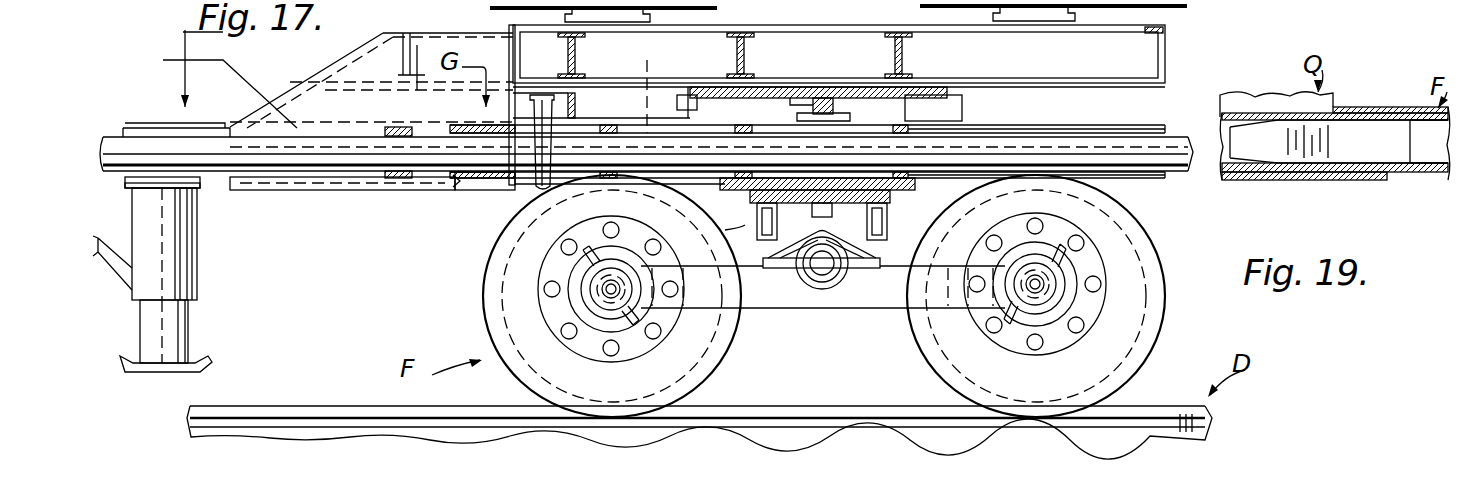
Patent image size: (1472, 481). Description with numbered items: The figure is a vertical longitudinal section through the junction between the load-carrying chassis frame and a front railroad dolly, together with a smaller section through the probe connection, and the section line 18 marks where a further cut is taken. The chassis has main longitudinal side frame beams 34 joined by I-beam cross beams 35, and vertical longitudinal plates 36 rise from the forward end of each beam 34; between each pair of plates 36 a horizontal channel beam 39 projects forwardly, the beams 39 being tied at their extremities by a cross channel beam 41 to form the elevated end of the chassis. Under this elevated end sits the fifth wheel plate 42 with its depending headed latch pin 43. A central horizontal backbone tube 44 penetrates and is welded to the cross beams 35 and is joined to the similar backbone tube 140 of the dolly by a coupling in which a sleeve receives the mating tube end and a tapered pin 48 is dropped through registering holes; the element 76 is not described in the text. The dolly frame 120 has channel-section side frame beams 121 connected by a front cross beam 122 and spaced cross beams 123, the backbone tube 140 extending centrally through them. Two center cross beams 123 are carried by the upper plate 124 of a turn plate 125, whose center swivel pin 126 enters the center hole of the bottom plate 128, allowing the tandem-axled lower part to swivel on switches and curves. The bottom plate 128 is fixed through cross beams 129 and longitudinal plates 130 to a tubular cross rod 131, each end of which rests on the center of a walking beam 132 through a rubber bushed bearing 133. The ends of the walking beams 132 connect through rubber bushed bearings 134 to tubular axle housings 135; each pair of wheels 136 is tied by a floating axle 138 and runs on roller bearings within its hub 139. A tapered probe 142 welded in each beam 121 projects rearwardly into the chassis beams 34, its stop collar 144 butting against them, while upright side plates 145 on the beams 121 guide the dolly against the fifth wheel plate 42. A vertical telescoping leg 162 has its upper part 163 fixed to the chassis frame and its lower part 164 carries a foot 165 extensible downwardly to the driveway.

In FIG. 17, the section line / arrow 18 is at (405, 81).
In FIG. 17, the main longitudinal side frame beam 34 is at (162, 125).
In FIG. 19, the main longitudinal side frame beam 34 is at (1237, 182).
In FIG. 17, the cross beam 35 is at (393, 190).
In FIG. 17, the vertical longitudinal plate 36 is at (418, 37).
In FIG. 19, the vertical longitudinal plate 36 is at (1268, 80).
In FIG. 17, the horizontal channel beam 39 is at (839, 55).
In FIG. 17, the cross channel beam 41 is at (1165, 42).
In FIG. 17, the fifth wheel plate 42 is at (935, 93).
In FIG. 17, the latch pin 43 is at (800, 88).
In FIG. 17, the backbone tube 44 is at (204, 148).
In FIG. 17, the tapered pin 48 is at (543, 97).
In FIG. 17, the sleeve 76 is at (470, 188).
In FIG. 17, the dolly frame 120 is at (1147, 183).
In FIG. 17, the main longitudinal side frame beam 121 is at (1033, 178).
In FIG. 19, the main longitudinal side frame beam 121 is at (1428, 172).
In FIG. 17, the front cross beam 122 is at (1165, 125).
In FIG. 17, the cross beam 123 is at (735, 127).
In FIG. 17, the upper plate 124 is at (703, 210).
In FIG. 17, the turn plate 125 is at (715, 190).
In FIG. 17, the center swivel pin 126 is at (725, 230).
In FIG. 17, the bottom plate 128 is at (890, 198).
In FIG. 17, the cross beam 129 is at (937, 222).
In FIG. 17, the longitudinal plate 130 is at (888, 250).
In FIG. 17, the tubular cross rod 131 is at (840, 278).
In FIG. 17, the walking beam 132 is at (888, 310).
In FIG. 17, the rubber bushed bearing 133 is at (787, 0).
In FIG. 17, the rubber bushed bearing 134 is at (575, 272).
In FIG. 17, the tubular axle housing 135 is at (565, 290).
In FIG. 17, the wheel 136 is at (700, 378).
In FIG. 17, the floating axle 138 is at (590, 285).
In FIG. 17, the hub 139 is at (580, 300).
In FIG. 17, the backbone tube 140 is at (1097, 143).
In FIG. 19, the probe 142 is at (1302, 180).
In FIG. 19, the stop collar 144 is at (1395, 87).
In FIG. 17, the upright side plate 145 is at (867, 105).
In FIG. 17, the telescoping leg 162 is at (205, 243).
In FIG. 17, the upper part 163 is at (167, 212).
In FIG. 17, the lower part 164 is at (185, 320).
In FIG. 17, the foot 165 is at (205, 372).